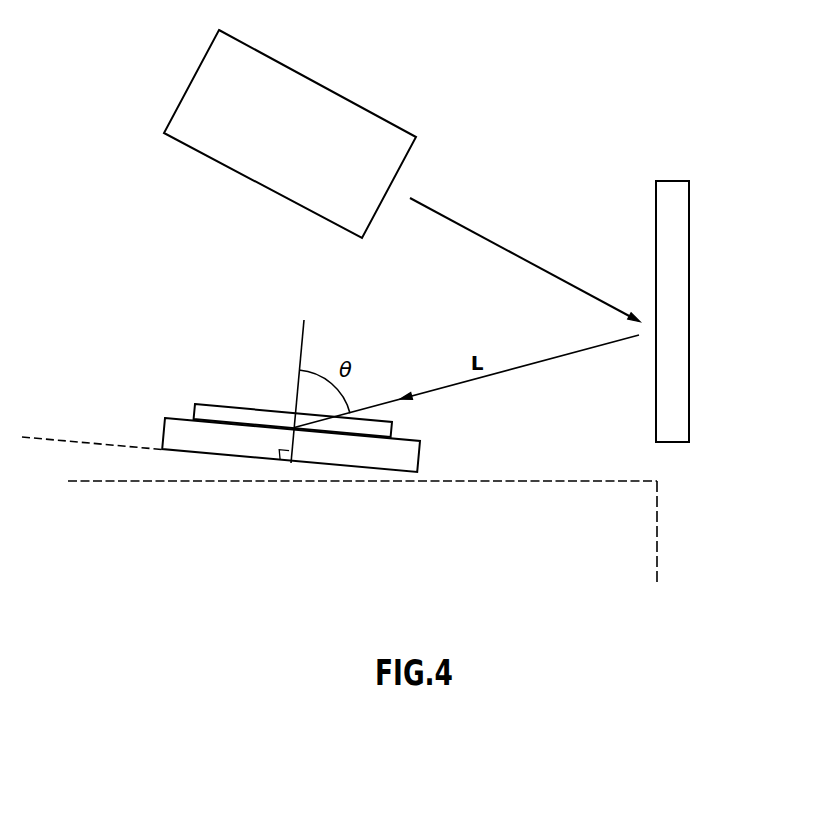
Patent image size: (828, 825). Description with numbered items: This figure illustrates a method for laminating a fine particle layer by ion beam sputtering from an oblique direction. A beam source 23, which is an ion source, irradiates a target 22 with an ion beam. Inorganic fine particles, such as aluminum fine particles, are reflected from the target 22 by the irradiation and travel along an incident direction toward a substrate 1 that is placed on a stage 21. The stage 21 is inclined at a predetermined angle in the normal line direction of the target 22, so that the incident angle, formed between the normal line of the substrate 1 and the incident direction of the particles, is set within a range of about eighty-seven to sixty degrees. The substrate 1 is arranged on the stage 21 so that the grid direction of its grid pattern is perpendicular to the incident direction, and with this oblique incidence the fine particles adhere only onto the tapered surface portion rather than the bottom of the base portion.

The beam source 23 is at (317, 95).
The target 22 is at (673, 188).
The stage 21 is at (172, 430).
The sample substrate 1 is at (204, 410).